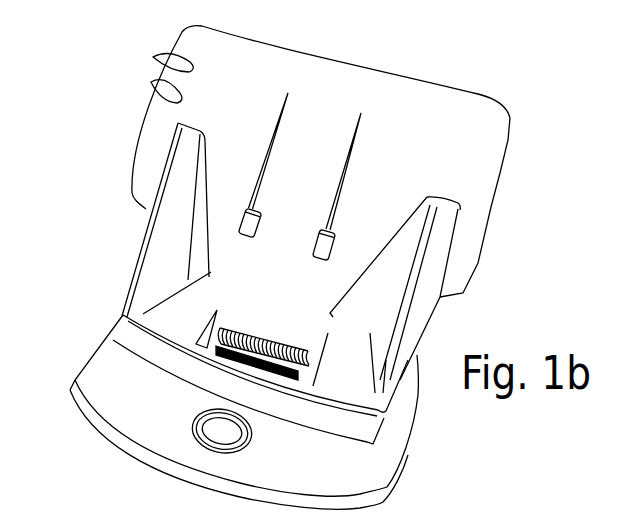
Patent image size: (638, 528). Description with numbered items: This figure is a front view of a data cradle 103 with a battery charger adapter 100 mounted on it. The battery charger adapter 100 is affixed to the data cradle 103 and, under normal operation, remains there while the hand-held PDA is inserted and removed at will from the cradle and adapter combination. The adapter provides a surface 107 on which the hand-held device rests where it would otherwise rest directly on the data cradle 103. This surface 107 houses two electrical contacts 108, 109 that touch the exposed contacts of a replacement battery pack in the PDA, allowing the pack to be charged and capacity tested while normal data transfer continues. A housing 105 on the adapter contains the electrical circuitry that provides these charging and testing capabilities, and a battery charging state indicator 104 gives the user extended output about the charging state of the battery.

The battery charger adapter 100 is at (358, 65).
The data cradle 103 is at (78, 380).
The battery charging state indicator 104 is at (163, 97).
The housing for the electrical circuitry 105 is at (455, 122).
The surface for the hand-held device 107 is at (224, 181).
The electrical contact 108 is at (246, 237).
The electrical contact 109 is at (314, 258).